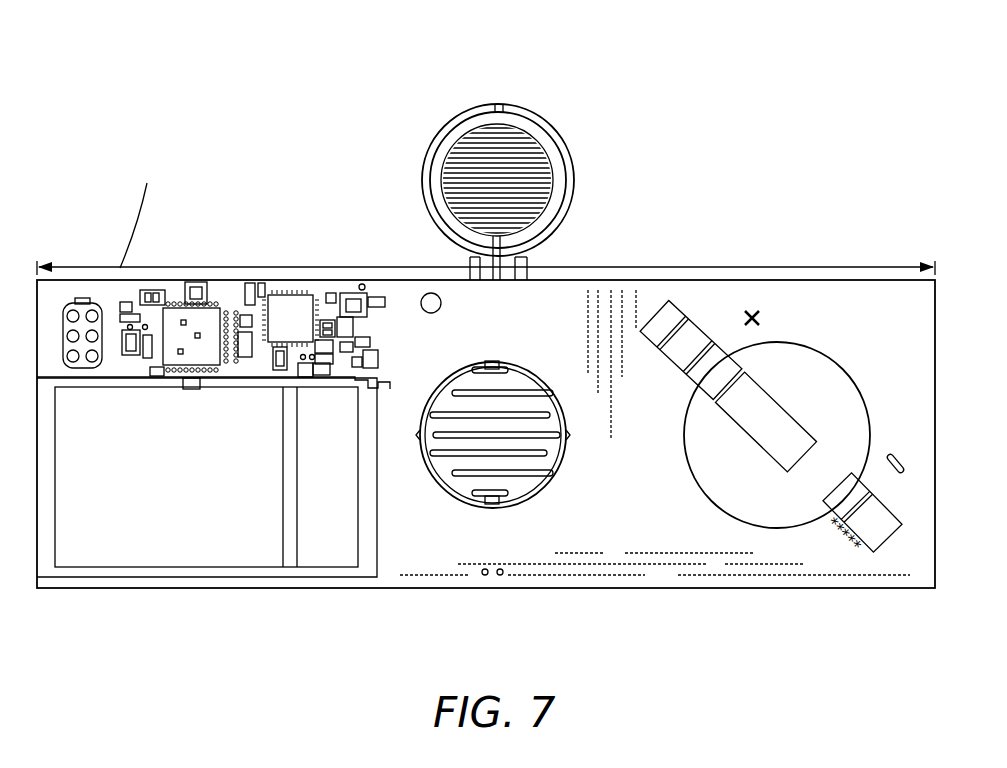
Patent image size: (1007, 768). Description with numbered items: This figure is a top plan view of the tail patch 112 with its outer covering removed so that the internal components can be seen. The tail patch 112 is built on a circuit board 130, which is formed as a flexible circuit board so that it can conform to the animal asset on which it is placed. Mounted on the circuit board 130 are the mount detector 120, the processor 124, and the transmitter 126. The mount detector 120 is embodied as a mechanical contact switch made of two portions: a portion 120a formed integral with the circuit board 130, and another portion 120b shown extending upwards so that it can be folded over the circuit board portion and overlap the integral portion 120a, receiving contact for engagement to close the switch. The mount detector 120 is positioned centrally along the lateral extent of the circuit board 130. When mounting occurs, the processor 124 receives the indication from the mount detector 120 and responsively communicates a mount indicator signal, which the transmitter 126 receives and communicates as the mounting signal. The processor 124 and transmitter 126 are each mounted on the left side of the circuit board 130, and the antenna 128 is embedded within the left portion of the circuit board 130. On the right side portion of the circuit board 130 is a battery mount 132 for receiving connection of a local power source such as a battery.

The tail patch 112 is at (700, 252).
The mount detector 120 is at (534, 155).
The portion integral with the circuit board 120a is at (530, 367).
The another portion of the mount detector 120b is at (539, 112).
The processor 124 is at (211, 290).
The transmitter 126 is at (290, 330).
The antenna 128 is at (252, 590).
The circuit board 130 is at (820, 280).
The battery mount 132 is at (762, 478).